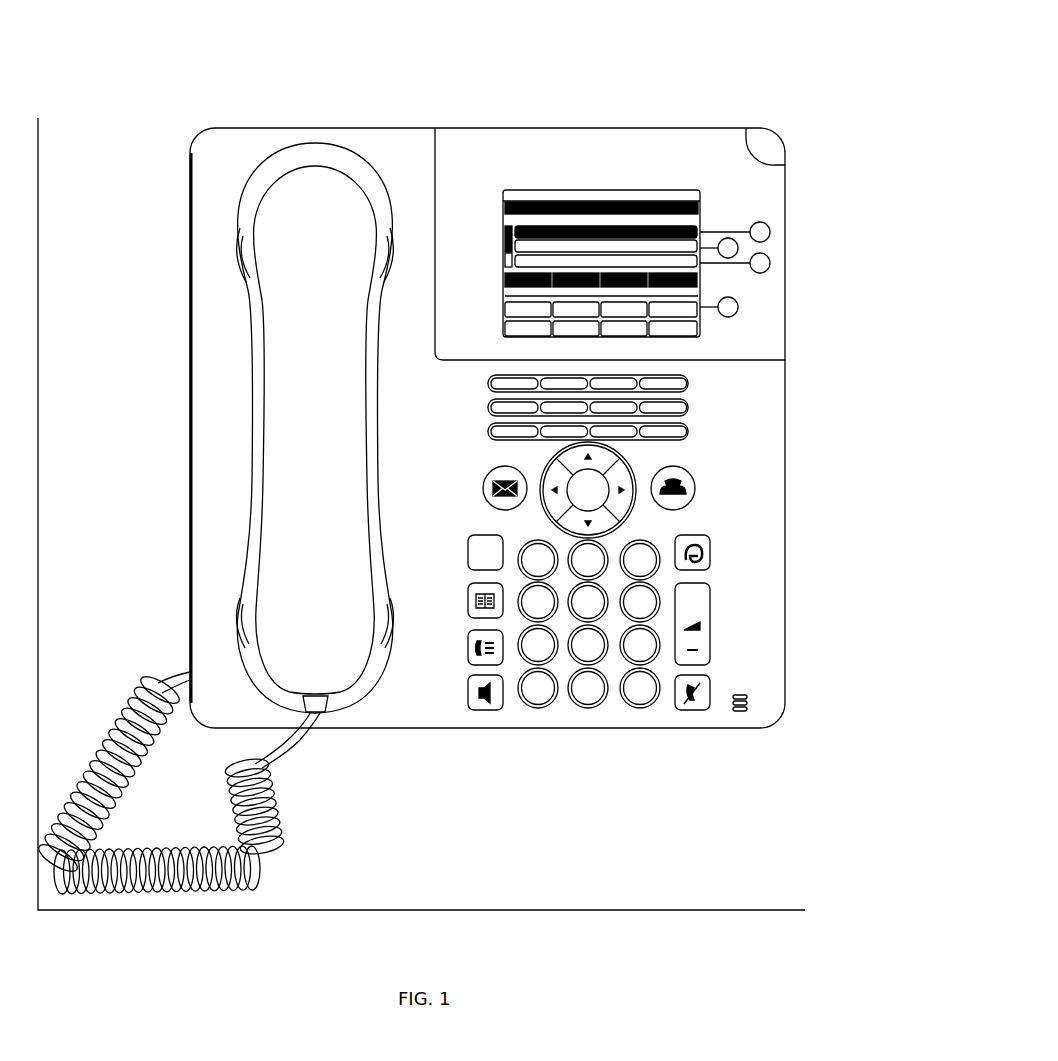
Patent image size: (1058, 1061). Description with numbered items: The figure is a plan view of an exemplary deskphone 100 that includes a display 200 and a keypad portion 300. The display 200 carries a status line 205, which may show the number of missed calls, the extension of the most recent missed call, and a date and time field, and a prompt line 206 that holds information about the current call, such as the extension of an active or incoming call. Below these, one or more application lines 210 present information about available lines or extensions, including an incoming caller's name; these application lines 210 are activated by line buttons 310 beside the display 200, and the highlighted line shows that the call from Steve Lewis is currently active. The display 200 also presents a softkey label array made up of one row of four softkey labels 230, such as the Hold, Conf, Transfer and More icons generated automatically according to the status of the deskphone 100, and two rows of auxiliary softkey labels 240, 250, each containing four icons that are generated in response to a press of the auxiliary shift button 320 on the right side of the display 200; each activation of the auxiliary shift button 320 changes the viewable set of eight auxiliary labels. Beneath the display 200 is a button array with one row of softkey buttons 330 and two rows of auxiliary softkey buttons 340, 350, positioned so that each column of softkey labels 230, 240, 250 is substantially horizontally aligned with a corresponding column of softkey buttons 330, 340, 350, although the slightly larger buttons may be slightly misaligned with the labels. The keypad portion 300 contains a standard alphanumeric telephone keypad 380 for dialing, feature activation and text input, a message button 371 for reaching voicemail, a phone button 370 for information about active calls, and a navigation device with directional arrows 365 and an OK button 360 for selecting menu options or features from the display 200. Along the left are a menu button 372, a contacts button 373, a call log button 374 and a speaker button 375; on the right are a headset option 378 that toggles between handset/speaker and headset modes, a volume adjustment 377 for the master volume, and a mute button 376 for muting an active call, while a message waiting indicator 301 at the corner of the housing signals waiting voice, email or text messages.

The deskphone 100 is at (574, 818).
The display 200 is at (653, 171).
The status line 205 is at (608, 193).
The prompt line 206 is at (692, 220).
The application lines 210 is at (503, 232).
The softkey labels 230 is at (503, 282).
The auxiliary softkey labels 240 is at (700, 300).
The auxiliary softkey labels 250 is at (703, 328).
The keypad portion 300 is at (769, 620).
The message waiting indicator 301 is at (786, 130).
The line buttons 310 is at (738, 248).
The auxiliary shift button 320 is at (738, 307).
The softkey buttons 330 is at (690, 381).
The auxiliary softkey buttons 340 is at (690, 406).
The auxiliary softkey buttons 350 is at (690, 431).
The OK button 360 is at (602, 506).
The directional arrows 365 is at (612, 459).
The phone button 370 is at (692, 492).
The message button 371 is at (483, 495).
The menu button 372 is at (467, 548).
The contacts button 373 is at (503, 612).
The call log button 374 is at (467, 652).
The speaker button 375 is at (490, 712).
The mute button 376 is at (700, 697).
The volume adjustment 377 is at (712, 617).
The headset option 378 is at (712, 556).
The alphanumeric telephone keypad 380 is at (590, 706).